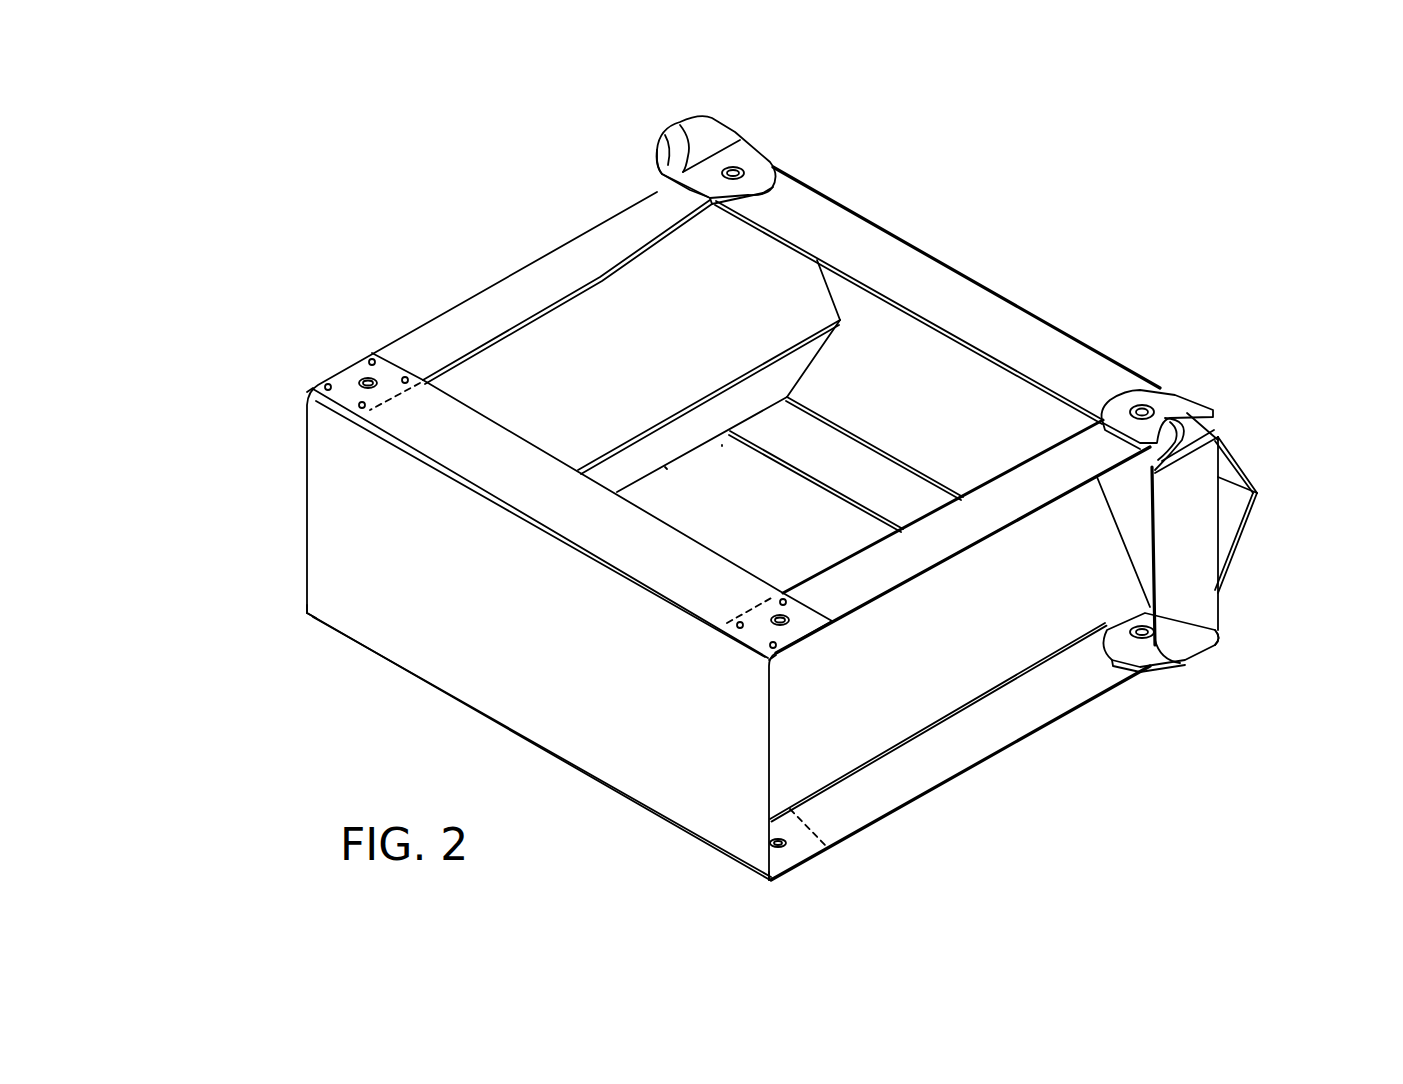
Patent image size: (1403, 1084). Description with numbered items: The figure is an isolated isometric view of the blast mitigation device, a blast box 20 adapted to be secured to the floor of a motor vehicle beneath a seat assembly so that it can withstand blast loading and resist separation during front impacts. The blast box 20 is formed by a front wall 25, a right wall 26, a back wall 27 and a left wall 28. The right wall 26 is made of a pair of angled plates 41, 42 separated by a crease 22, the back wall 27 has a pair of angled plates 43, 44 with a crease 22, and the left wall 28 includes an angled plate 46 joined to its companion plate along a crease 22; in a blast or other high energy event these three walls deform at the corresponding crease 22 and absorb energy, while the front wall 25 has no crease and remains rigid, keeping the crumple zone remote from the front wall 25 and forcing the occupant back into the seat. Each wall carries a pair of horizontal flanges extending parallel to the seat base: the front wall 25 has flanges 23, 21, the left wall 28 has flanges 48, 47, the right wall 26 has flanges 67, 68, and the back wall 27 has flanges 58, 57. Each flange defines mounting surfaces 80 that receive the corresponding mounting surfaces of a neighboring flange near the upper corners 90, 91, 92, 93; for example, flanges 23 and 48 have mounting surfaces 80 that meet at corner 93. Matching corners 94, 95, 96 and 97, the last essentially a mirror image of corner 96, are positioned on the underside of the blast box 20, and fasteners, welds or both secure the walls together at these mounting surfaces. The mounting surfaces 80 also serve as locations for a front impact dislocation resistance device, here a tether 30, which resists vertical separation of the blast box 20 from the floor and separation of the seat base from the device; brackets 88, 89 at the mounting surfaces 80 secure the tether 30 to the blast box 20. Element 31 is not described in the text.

The blast box 20 is at (486, 236).
The horizontal flange 21 is at (420, 680).
The crease 22 is at (720, 383).
The horizontal flange 23 is at (587, 531).
The front wall 25 is at (320, 490).
The right wall 26 is at (549, 395).
The back wall 27 is at (874, 385).
The left wall 28 is at (885, 663).
The tether 30 is at (1200, 608).
The hinge loop 31 is at (657, 177).
The angled plate 41 is at (709, 305).
The angled plate 42 is at (739, 407).
The angled plate 43 is at (1233, 450).
The angled plate 44 is at (1243, 537).
The angled plate 46 is at (1015, 587).
The horizontal flange 47 is at (942, 755).
The horizontal flange 48 is at (935, 542).
The horizontal flange 57 is at (885, 505).
The horizontal flange 58 is at (893, 293).
The horizontal flange 67 is at (552, 285).
The horizontal flange 68 is at (667, 468).
The mounting surface 80 is at (352, 373).
The bracket 88 is at (1123, 652).
The bracket 89 is at (722, 120).
The corner 90 is at (300, 389).
The corner 91 is at (750, 135).
The corner 92 is at (1199, 396).
The corner 93 is at (758, 667).
The corner 94 is at (300, 616).
The corner 95 is at (762, 884).
The corner 96 is at (1228, 626).
The corner 97 is at (722, 446).